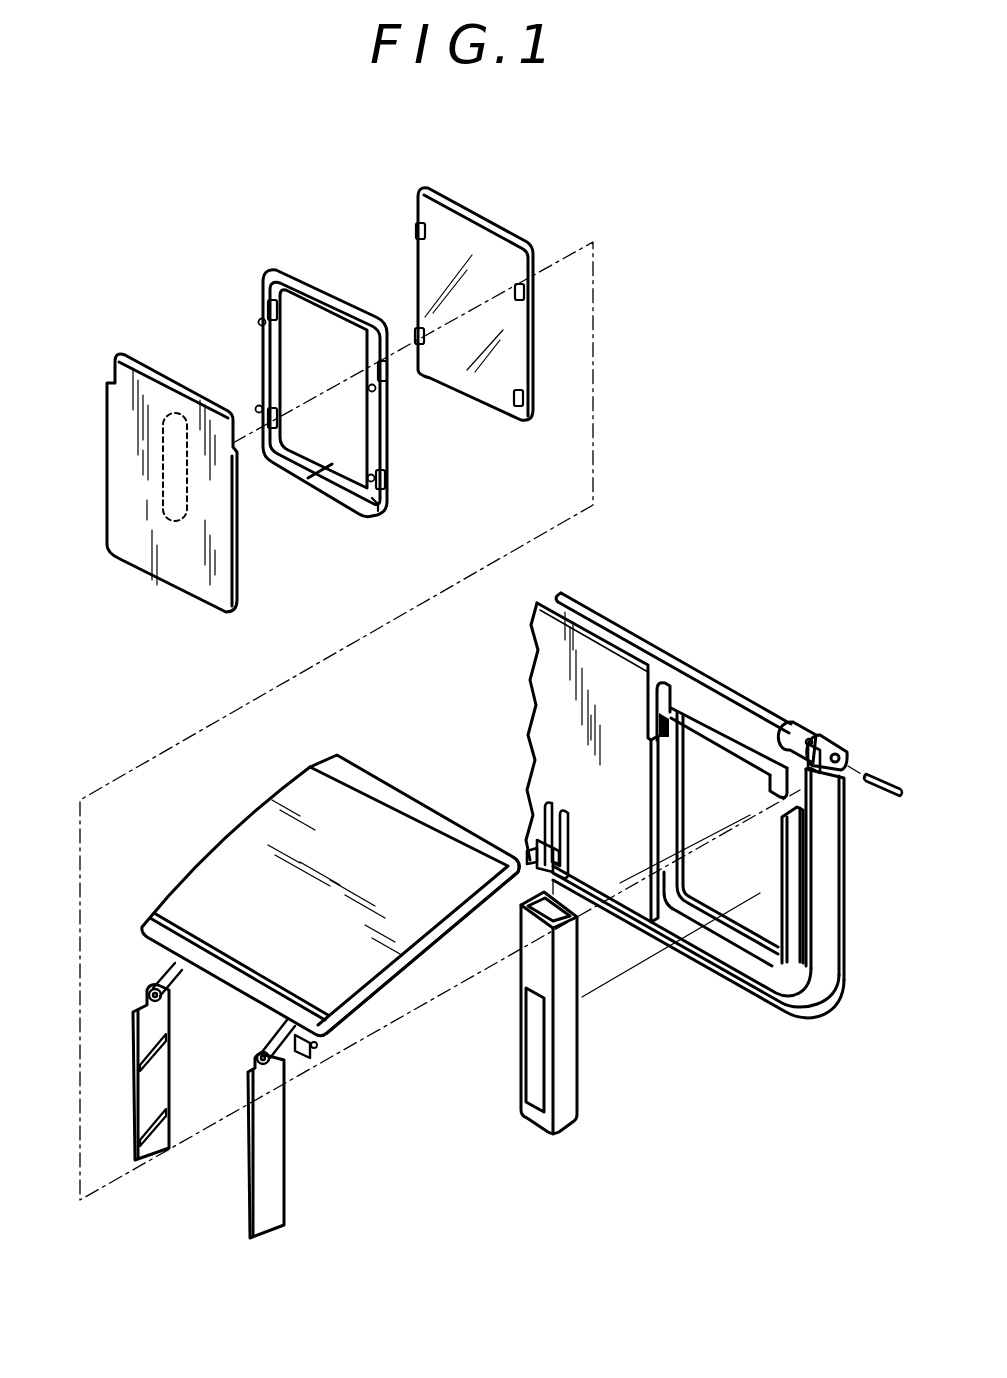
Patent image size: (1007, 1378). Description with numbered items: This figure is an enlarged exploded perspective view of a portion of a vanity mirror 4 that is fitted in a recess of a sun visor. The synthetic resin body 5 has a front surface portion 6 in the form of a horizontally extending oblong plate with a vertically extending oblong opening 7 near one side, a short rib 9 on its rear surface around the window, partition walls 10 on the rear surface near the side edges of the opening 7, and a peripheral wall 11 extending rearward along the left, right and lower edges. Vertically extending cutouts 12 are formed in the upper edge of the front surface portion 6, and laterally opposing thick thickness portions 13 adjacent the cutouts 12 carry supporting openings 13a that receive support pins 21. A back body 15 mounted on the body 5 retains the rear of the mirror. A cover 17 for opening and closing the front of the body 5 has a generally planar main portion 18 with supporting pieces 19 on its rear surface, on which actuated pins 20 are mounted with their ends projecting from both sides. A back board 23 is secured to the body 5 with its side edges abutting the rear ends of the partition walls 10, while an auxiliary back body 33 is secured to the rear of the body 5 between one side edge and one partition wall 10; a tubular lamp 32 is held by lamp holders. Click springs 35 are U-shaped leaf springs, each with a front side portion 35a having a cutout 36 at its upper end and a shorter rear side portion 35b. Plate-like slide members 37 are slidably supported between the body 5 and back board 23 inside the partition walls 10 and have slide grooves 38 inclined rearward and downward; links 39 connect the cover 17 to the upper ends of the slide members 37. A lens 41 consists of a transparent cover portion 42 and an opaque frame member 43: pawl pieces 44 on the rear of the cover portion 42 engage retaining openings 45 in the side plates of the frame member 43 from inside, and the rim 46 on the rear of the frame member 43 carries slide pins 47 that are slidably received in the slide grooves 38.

The vanity mirror 4 is at (600, 188).
The body 5 is at (844, 873).
The front surface portion 6 is at (634, 636).
The opening 7 is at (707, 748).
The rib 9 is at (661, 686).
The partition wall 10 is at (651, 808).
The peripheral wall 11 is at (753, 990).
The cutout 12 is at (790, 767).
The thick thickness portion 13 is at (797, 719).
The supporting opening 13a is at (816, 735).
The back body 15 is at (596, 668).
The cover 17 is at (397, 953).
The main portion 18 is at (243, 826).
The supporting piece 19 is at (313, 1057).
The actuated pin 20 is at (313, 1060).
The support pin 21 is at (879, 793).
The back board 23 is at (150, 563).
The tubular lamp 32 is at (190, 487).
The auxiliary back body 33 is at (572, 1060).
The click spring 35 is at (548, 844).
The front side portion 35a is at (562, 812).
The rear side portion 35b is at (530, 842).
The cutout 36 is at (556, 803).
The slide member 37 is at (170, 1148).
The slide groove 38 is at (166, 1046).
The link 39 is at (170, 968).
The lens 41 is at (289, 167).
The cover portion 42 is at (421, 198).
The frame member 43 is at (303, 276).
The pawl piece 44 is at (415, 231).
The retaining opening 45 is at (267, 310).
The rim 46 is at (374, 505).
The slide pin 47 is at (258, 406).